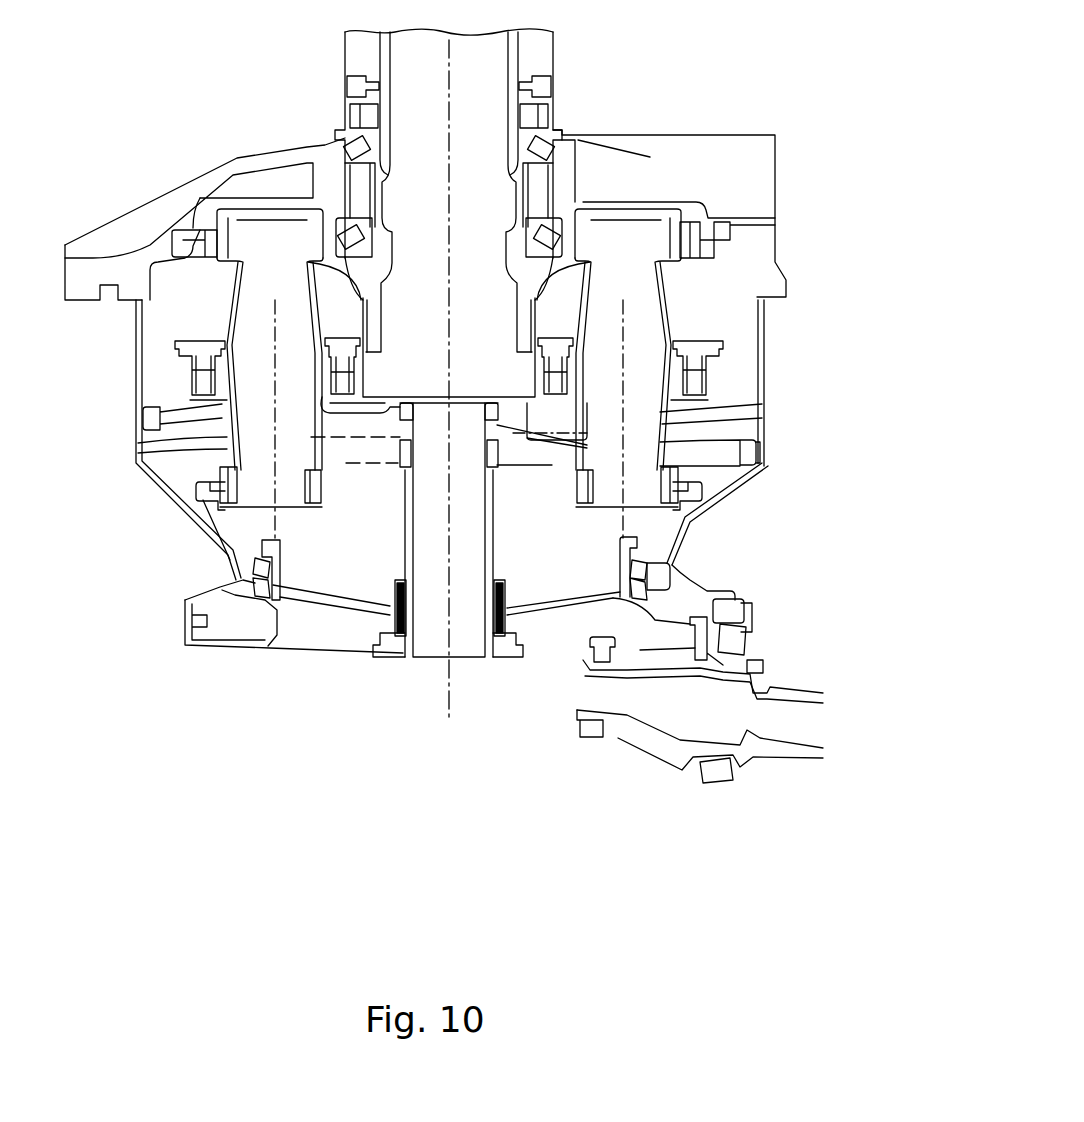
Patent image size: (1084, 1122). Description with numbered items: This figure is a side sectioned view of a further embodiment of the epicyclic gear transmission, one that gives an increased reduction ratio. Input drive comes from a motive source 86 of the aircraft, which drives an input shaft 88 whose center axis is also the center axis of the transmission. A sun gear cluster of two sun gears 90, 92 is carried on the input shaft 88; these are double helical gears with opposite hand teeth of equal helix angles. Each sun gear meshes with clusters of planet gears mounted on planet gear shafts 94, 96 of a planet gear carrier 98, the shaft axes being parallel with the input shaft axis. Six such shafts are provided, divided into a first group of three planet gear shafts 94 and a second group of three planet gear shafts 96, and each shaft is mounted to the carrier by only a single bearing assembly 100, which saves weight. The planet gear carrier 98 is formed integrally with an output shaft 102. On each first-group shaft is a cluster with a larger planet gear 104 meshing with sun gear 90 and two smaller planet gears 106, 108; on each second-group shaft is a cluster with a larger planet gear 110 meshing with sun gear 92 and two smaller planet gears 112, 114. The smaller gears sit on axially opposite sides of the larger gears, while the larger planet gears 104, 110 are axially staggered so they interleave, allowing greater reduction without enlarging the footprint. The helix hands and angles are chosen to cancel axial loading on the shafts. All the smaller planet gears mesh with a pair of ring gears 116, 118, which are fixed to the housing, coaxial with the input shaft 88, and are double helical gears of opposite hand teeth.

The motive source 86 is at (631, 769).
The input shaft 88 is at (404, 540).
The sun gear 90 is at (401, 415).
The sun gear 92 is at (497, 415).
The planet gear shaft 94 is at (663, 420).
The planet gear shaft 96 is at (240, 441).
The planet gear carrier 98 is at (537, 300).
The bearing assembly 100 is at (210, 376).
The output shaft 102 is at (520, 50).
The larger planet gear 104 is at (757, 448).
The smaller planet gear 106 is at (697, 507).
The smaller planet gear 108 is at (690, 240).
The larger planet gear 110 is at (150, 425).
The smaller planet gear 112 is at (236, 522).
The smaller planet gear 114 is at (218, 228).
The ring gear 116 is at (205, 482).
The ring gear 118 is at (200, 250).